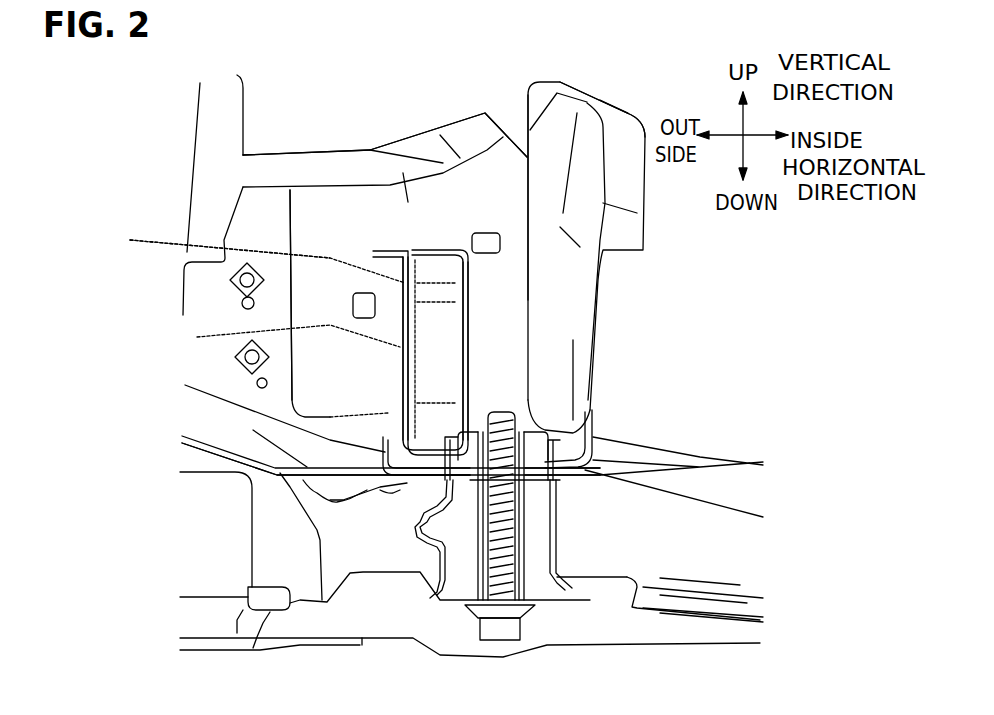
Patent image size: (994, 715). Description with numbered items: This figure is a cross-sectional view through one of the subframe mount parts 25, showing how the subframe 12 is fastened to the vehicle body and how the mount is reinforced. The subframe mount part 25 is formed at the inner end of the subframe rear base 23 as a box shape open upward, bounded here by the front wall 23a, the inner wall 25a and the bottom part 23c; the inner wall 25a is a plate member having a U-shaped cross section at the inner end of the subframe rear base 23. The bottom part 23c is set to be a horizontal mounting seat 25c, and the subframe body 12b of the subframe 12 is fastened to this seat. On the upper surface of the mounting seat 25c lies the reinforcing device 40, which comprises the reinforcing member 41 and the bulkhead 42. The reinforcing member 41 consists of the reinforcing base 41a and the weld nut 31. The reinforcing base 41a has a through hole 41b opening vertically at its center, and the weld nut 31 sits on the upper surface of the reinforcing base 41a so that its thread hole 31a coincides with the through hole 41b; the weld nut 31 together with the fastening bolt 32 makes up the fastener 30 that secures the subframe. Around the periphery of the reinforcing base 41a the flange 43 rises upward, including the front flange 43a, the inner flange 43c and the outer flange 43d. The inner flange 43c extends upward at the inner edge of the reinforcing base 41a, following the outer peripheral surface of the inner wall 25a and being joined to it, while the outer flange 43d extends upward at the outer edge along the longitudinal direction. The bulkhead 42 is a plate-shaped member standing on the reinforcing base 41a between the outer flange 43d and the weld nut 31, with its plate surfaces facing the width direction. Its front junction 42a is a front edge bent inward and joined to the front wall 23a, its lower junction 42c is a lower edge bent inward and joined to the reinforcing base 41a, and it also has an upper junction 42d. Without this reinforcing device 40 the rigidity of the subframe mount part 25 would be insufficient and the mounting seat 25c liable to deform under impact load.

The subframe 12 is at (557, 603).
The subframe body 12b is at (677, 647).
The subframe rear base 23 is at (377, 99).
The front wall 23a is at (302, 150).
The bottom part 23c is at (355, 450).
The subframe mount part 25 is at (217, 73).
The inner wall 25a is at (593, 100).
The mounting seat 25c is at (251, 440).
The fastener 30 is at (604, 440).
The weld nut 31 is at (515, 435).
The thread hole 31a is at (520, 497).
The fastening bolt 32 is at (520, 425).
The reinforcing device 40 is at (161, 288).
The reinforcing member 41 is at (130, 240).
The reinforcing base 41a is at (180, 217).
The through hole 41b is at (550, 480).
The bulkhead 42 is at (197, 337).
The front junction 42a is at (437, 262).
The lower junction 42c is at (463, 463).
The upper junction 42d is at (405, 255).
The flange 43 is at (561, 237).
The front flange 43a is at (430, 460).
The inner flange 43c is at (590, 427).
The outer flange 43d is at (388, 455).